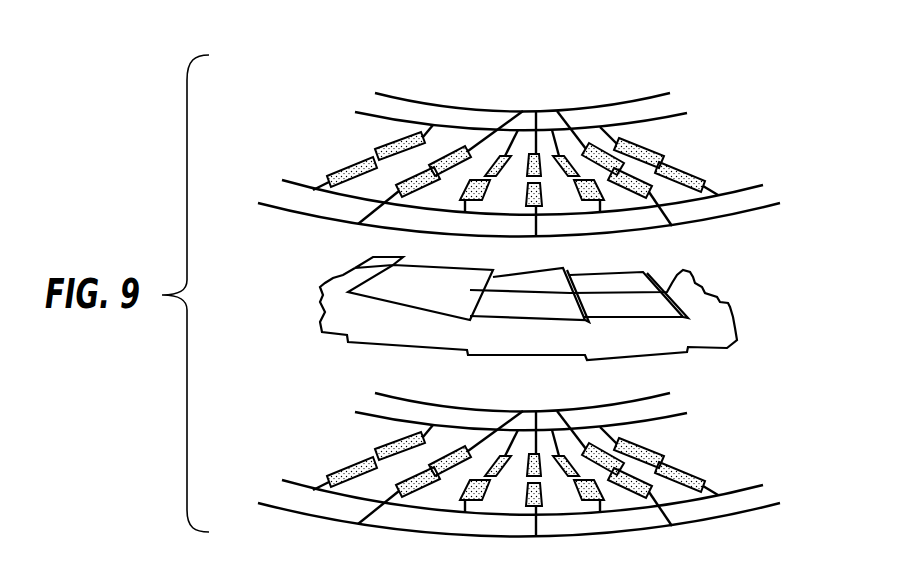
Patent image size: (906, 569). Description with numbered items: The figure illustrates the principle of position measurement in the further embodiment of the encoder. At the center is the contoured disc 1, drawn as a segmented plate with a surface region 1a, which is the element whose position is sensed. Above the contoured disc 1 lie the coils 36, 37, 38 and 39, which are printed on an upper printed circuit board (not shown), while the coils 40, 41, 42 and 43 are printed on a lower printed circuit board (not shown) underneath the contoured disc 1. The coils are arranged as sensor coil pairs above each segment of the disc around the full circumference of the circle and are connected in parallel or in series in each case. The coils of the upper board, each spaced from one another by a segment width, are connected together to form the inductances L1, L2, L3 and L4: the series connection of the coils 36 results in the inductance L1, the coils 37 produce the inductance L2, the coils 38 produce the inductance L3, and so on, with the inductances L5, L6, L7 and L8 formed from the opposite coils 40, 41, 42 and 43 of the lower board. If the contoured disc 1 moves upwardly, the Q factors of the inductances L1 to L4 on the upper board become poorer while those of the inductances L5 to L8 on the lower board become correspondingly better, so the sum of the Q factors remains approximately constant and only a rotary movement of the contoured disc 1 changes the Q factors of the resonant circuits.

The contoured disc 1 is at (717, 327).
The upper surface layer of substrate 1a is at (680, 275).
The coil 36 is at (412, 178).
The coil 37 is at (346, 166).
The coil 38 is at (457, 150).
The coil 39 is at (407, 137).
The coil 40 is at (520, 502).
The coil 41 is at (518, 483).
The coil 42 is at (527, 421).
The coil 43 is at (522, 421).
The inductance L1 is at (505, 213).
The inductance L2 is at (508, 185).
The inductance L3 is at (507, 90).
The inductance L4 is at (506, 113).
The inductance L5 is at (505, 513).
The inductance L6 is at (508, 485).
The inductance L7 is at (506, 413).
The inductance L8 is at (507, 390).